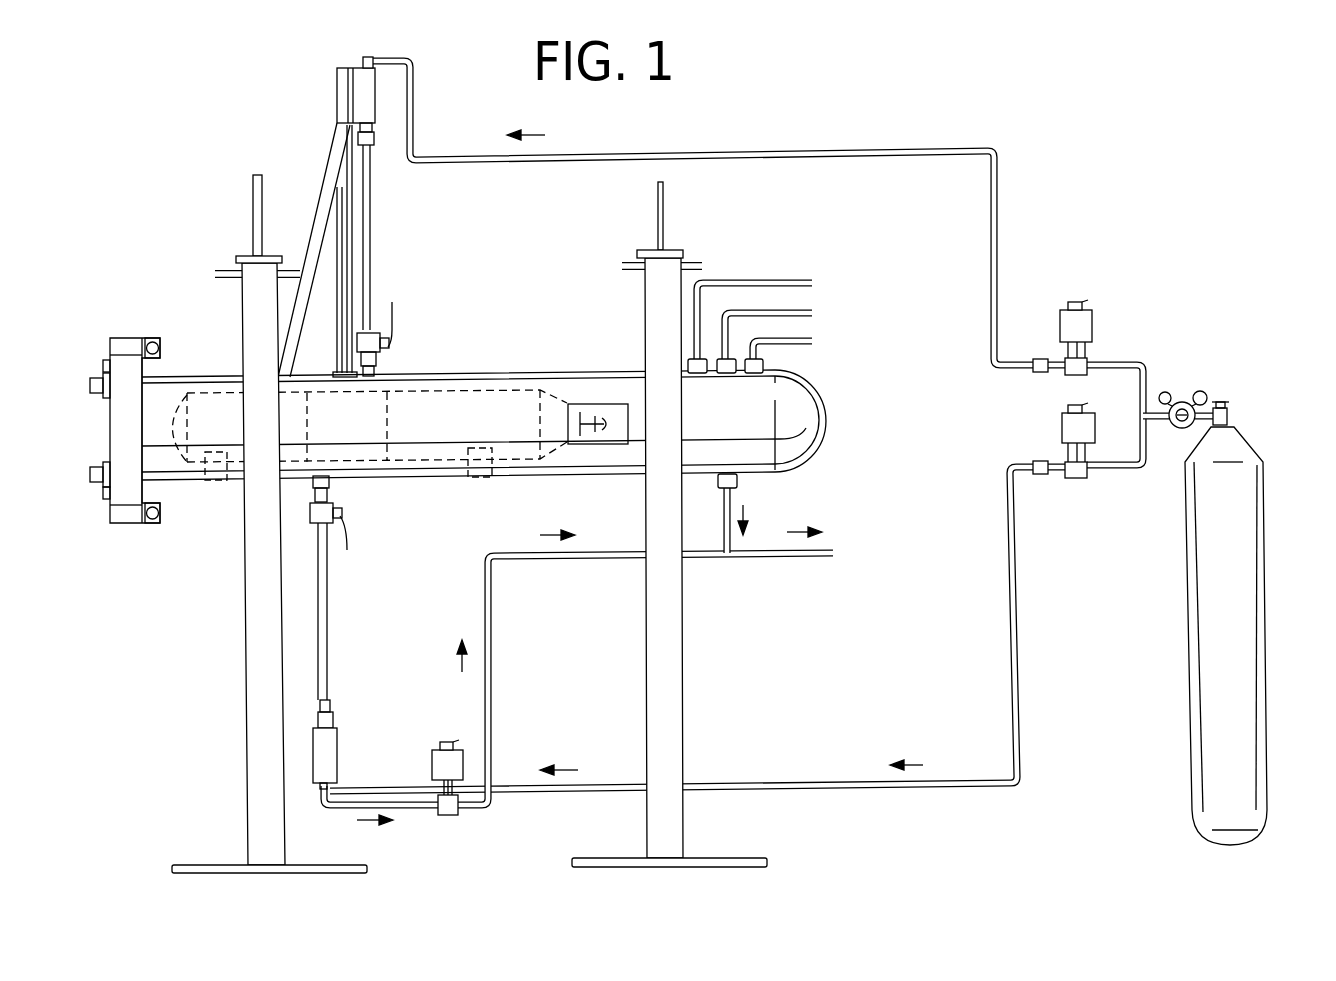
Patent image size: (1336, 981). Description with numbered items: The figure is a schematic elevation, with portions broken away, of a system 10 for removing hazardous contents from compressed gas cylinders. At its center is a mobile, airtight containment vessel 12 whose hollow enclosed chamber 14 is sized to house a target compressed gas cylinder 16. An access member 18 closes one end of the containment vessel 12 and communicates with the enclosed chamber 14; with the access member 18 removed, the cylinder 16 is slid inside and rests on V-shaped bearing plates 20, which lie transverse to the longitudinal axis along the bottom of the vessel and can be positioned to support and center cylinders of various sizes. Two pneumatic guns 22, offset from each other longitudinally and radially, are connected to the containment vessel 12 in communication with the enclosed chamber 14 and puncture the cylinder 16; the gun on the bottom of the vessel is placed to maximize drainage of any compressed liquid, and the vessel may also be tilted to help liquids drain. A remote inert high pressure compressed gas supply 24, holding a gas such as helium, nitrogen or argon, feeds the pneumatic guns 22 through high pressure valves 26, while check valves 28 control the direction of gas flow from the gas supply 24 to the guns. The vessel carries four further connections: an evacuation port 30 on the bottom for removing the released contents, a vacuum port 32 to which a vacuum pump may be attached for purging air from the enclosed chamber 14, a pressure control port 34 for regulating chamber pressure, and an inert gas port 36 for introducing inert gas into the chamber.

The system 10 is at (990, 92).
The containment vessel 12 is at (508, 373).
The enclosed chamber 14 is at (598, 385).
The compressed gas cylinder 16 is at (436, 392).
The access member 18 is at (110, 432).
The V-shaped bearing plates 20 is at (214, 480).
The pneumatic guns 22 is at (371, 216).
The inert high pressure compressed gas supply 24 is at (1267, 547).
The high pressure valves 26 is at (1093, 325).
The check valves 28 is at (1040, 359).
The evacuation port 30 is at (750, 560).
The vacuum port 32 is at (802, 349).
The pressure control port 34 is at (803, 302).
The inert gas port 36 is at (793, 282).